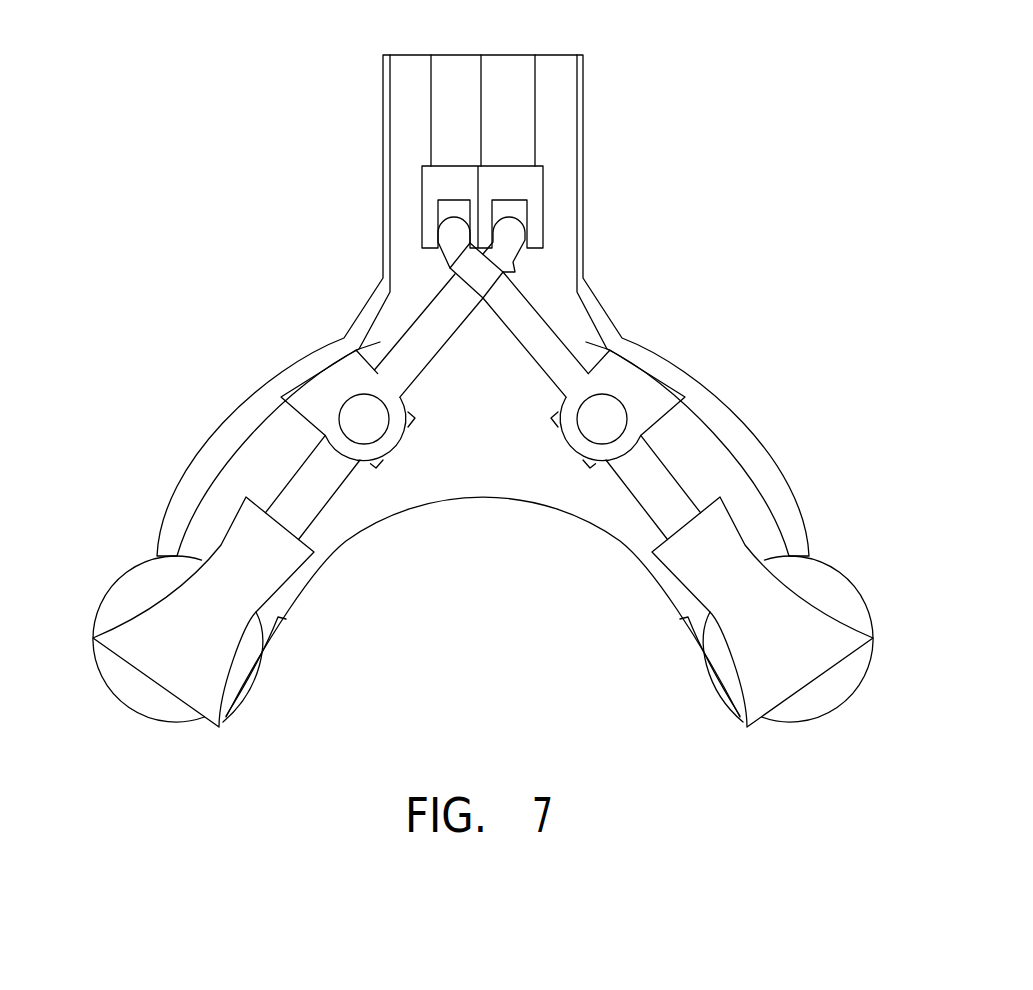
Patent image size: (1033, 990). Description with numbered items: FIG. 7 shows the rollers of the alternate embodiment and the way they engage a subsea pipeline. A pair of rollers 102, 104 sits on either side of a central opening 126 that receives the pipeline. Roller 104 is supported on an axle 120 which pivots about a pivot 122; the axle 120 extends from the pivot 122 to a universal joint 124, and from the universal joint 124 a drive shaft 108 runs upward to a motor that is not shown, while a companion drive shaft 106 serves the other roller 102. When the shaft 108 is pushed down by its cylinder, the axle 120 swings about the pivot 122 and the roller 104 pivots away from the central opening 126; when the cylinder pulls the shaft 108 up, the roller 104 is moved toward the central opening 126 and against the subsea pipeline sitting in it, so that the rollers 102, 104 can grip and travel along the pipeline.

The roller 102 is at (797, 640).
The roller 104 is at (132, 637).
The drive shaft 106 is at (450, 140).
The drive shaft 108 is at (528, 133).
The axle 120 is at (328, 502).
The pivot 122 is at (413, 420).
The universal joint 124 is at (542, 216).
The central opening 126 is at (473, 628).